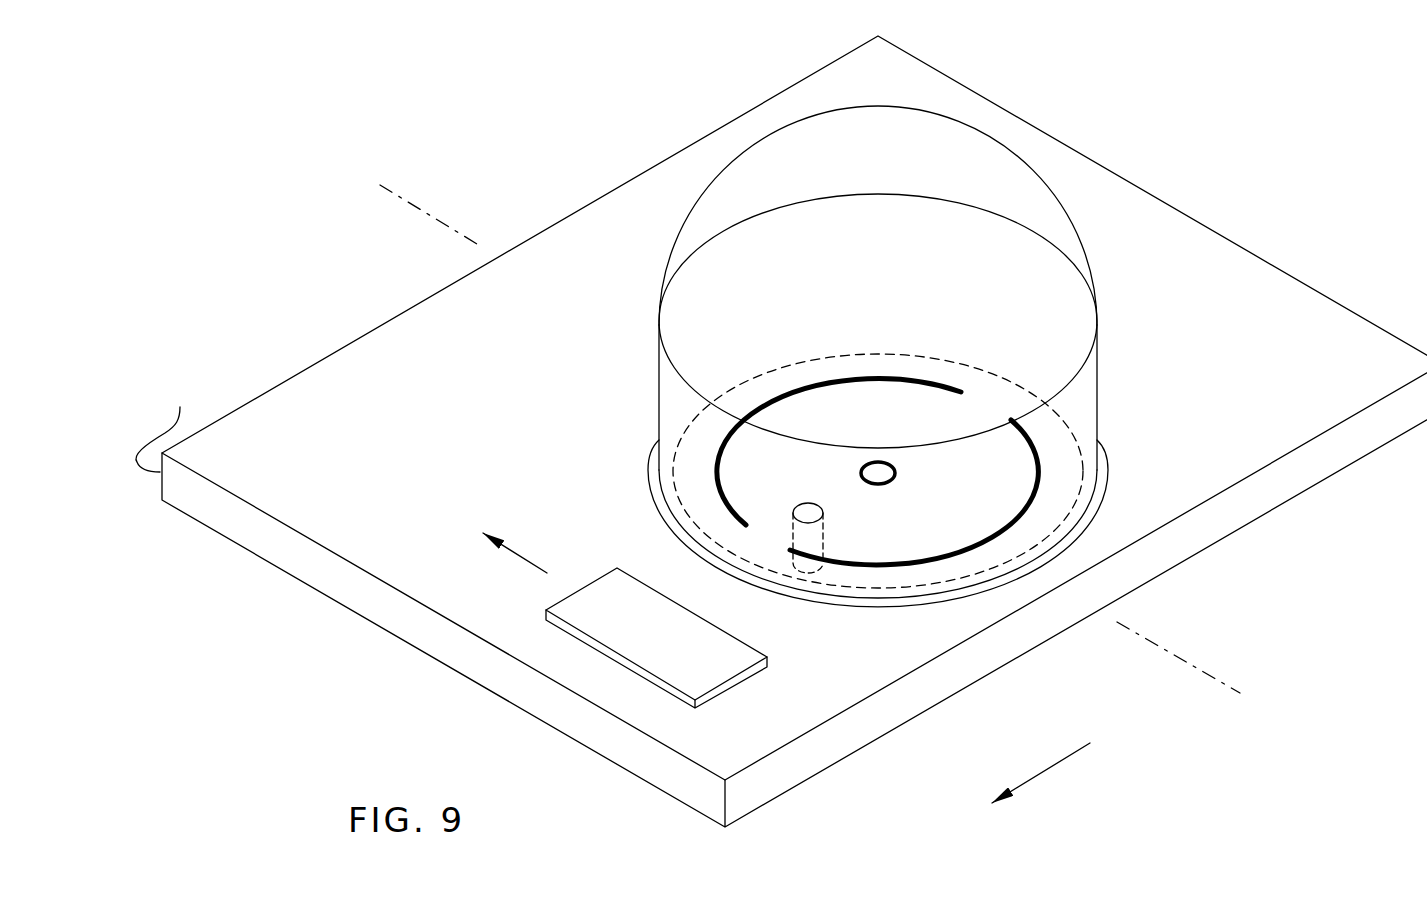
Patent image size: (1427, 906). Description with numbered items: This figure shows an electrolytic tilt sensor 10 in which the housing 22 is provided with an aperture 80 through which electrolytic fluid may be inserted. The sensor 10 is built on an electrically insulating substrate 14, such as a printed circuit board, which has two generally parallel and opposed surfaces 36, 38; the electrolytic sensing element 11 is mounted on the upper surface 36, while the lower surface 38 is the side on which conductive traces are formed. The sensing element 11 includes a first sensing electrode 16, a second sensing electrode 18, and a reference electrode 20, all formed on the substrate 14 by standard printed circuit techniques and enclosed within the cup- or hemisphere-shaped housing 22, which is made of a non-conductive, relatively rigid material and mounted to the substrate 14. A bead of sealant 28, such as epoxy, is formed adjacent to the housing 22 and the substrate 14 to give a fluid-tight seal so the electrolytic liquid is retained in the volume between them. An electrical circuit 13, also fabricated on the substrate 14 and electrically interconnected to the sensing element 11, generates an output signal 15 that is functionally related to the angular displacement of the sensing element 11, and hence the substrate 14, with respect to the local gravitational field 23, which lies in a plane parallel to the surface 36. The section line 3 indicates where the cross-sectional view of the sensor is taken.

The section line 3 is at (380, 210).
The electrolytic tilt sensor 10 is at (1272, 200).
The electrolytic sensing element 11 is at (960, 352).
The electrical circuit 13 is at (705, 675).
The electrically insulating substrate 14 is at (168, 425).
The output signal 15 is at (547, 573).
The first sensing electrode 16 is at (890, 463).
The second sensing electrode 18 is at (985, 464).
The reference electrode 20 is at (963, 390).
The housing 22 is at (1095, 280).
The local gravitational field 23 is at (1037, 775).
The bead of sealant 28 is at (652, 478).
The first surface of substrate 36 is at (323, 477).
The second surface of substrate 38 is at (375, 626).
The aperture 80 is at (824, 532).